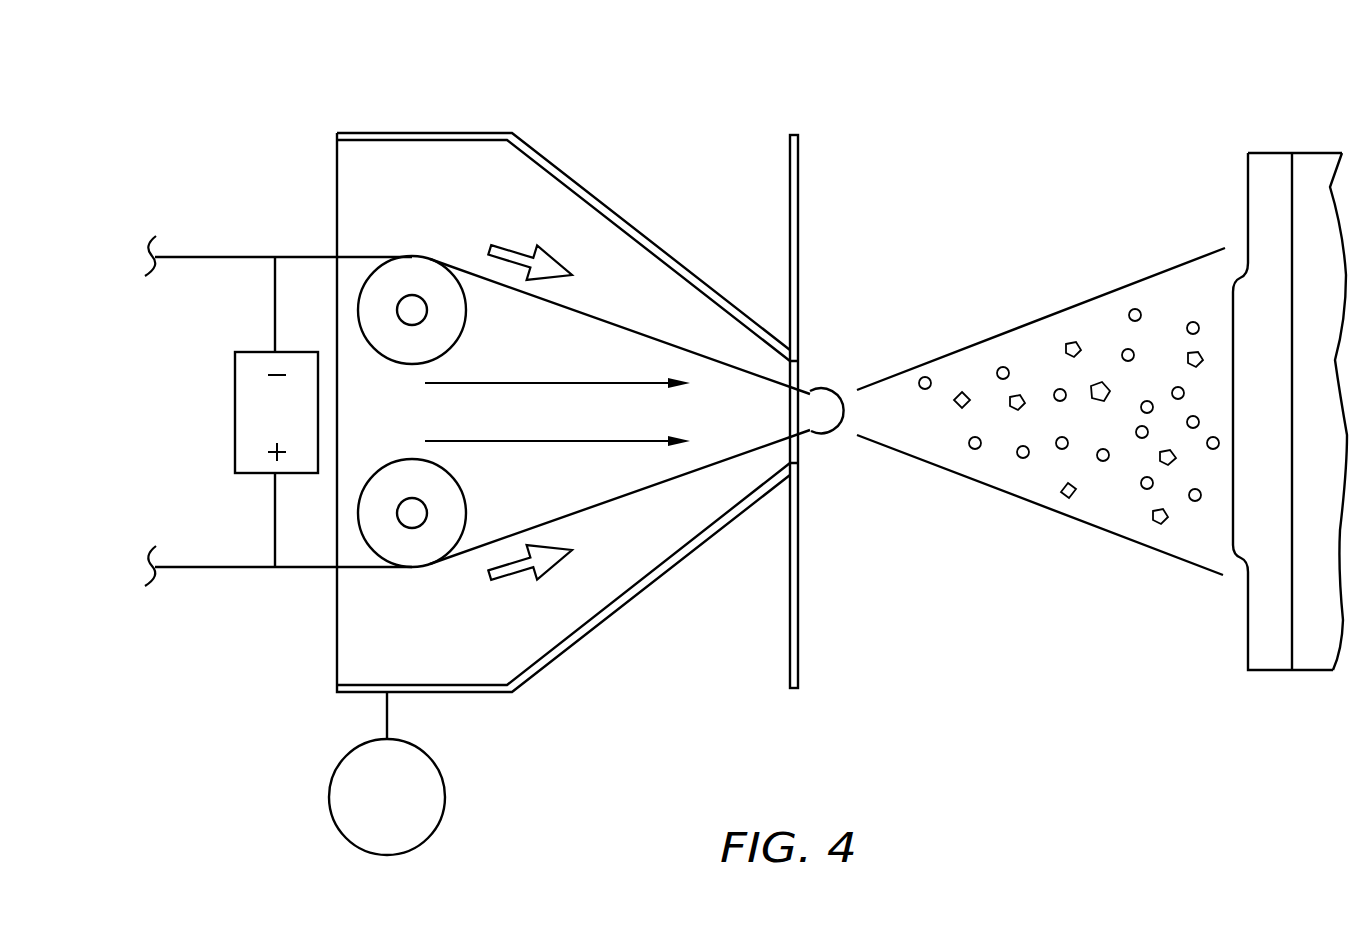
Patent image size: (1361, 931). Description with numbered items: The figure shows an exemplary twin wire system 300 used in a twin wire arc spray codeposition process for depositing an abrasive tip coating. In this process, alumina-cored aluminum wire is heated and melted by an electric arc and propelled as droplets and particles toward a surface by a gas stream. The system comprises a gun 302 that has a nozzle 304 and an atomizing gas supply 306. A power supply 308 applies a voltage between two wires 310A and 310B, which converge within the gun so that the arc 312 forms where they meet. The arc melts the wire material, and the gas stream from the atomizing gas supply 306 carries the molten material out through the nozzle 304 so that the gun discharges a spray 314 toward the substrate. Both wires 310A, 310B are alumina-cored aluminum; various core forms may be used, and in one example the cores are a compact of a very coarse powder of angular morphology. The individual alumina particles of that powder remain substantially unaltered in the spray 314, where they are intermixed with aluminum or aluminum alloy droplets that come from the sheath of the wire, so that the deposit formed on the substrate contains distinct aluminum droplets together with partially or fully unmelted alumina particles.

The twin wire system 300 is at (572, 95).
The gun 302 is at (619, 657).
The nozzle 304 is at (644, 597).
The atomizing gas supply 306 is at (410, 809).
The power supply 308 is at (253, 451).
The wire 310A is at (208, 256).
The wire 310B is at (227, 570).
The arc 312 is at (829, 432).
The spray 314 is at (1018, 477).